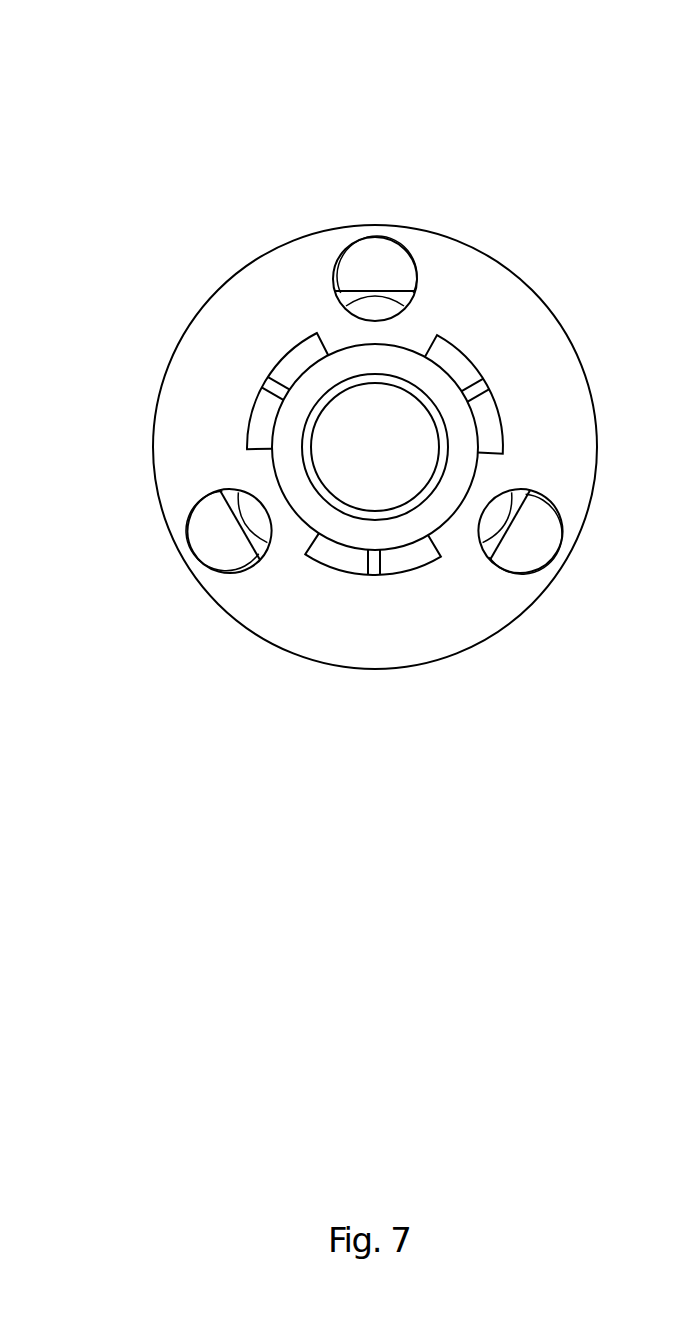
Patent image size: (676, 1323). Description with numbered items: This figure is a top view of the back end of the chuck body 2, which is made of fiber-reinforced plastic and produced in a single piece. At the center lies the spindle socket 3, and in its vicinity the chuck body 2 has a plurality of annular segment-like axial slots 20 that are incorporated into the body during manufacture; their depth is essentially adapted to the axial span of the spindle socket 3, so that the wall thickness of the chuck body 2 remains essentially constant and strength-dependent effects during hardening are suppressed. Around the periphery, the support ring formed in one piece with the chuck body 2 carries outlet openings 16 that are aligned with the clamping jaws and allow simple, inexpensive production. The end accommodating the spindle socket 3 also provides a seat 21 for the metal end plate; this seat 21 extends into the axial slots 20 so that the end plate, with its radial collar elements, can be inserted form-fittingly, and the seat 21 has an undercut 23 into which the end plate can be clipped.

The chuck body 2 is at (278, 195).
The spindle socket 3 is at (387, 470).
The outlet openings 16 is at (377, 257).
The annular segment-like axial slots 20 is at (263, 418).
The seat 21 is at (293, 473).
The undercut 23 is at (343, 353).